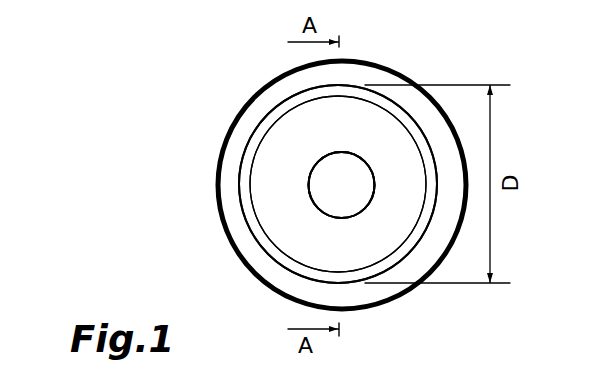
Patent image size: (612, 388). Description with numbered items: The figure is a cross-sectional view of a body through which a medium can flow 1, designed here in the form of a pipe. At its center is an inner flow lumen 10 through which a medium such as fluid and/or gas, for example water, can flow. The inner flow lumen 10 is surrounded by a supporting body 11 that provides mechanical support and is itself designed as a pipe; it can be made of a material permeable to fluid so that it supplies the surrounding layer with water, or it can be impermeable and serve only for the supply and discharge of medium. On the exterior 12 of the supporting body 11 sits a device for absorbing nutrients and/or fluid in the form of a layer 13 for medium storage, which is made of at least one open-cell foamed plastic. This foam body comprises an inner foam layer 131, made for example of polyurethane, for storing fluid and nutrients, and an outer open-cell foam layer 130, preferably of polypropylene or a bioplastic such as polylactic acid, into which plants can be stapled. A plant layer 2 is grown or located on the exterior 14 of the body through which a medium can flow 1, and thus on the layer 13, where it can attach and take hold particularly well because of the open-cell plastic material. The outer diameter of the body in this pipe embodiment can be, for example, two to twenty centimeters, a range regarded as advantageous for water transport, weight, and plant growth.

The body through which a medium can flow 1 is at (93, 64).
The plant layer 2 is at (380, 66).
The inner flow lumen 10 is at (336, 182).
The supporting body 11 is at (311, 207).
The exterior of the supporting body 12 is at (310, 213).
The layer for medium storage 13 is at (280, 104).
The outer open-cell foam layer 130 is at (258, 137).
The inner foam layer 131 is at (290, 138).
The exterior of the body through which a medium can flow 14 is at (243, 152).